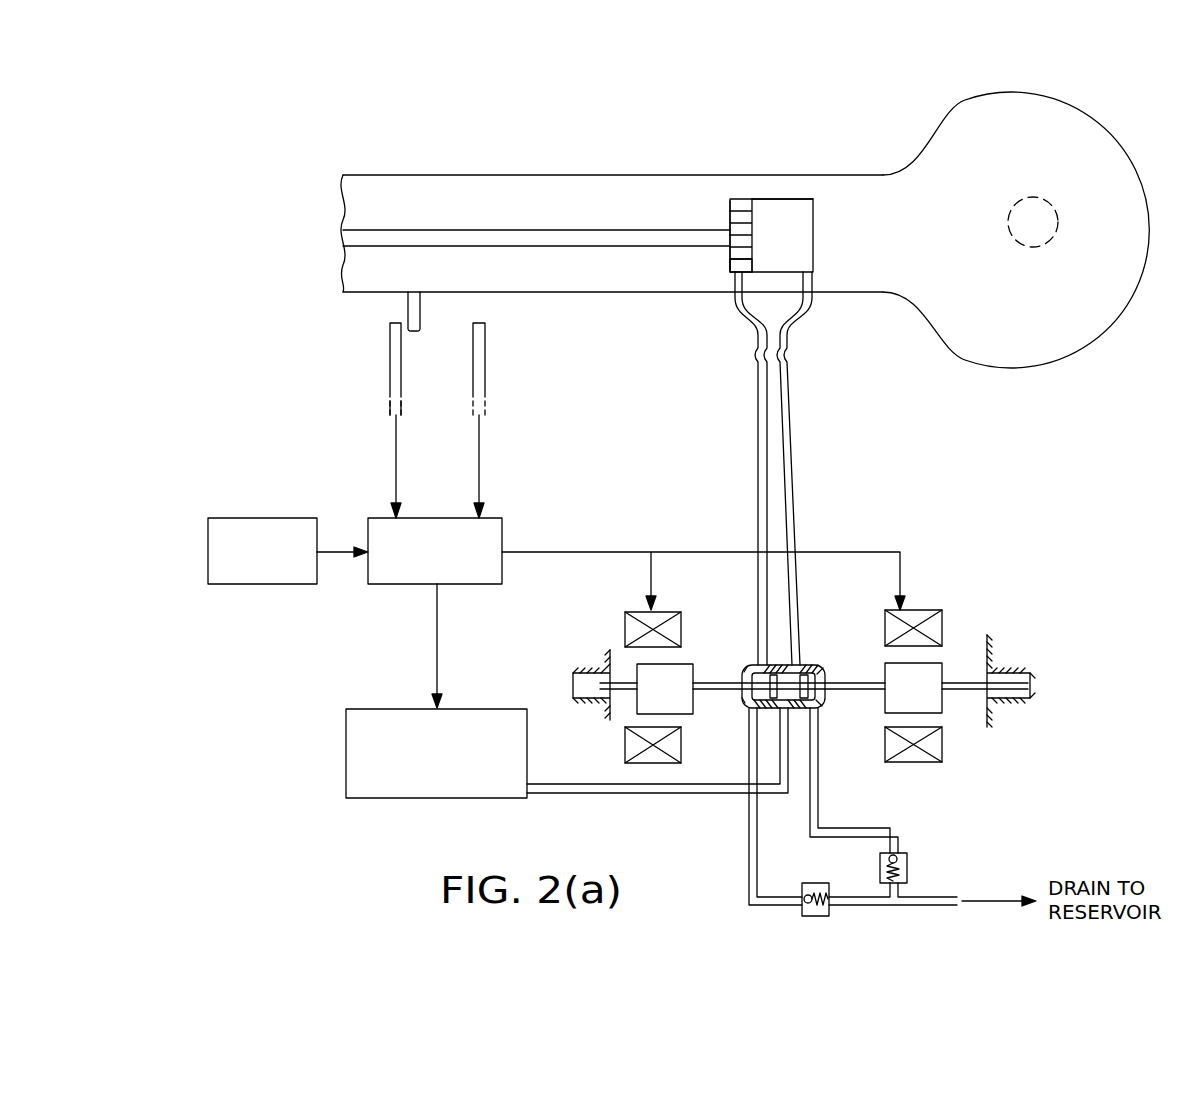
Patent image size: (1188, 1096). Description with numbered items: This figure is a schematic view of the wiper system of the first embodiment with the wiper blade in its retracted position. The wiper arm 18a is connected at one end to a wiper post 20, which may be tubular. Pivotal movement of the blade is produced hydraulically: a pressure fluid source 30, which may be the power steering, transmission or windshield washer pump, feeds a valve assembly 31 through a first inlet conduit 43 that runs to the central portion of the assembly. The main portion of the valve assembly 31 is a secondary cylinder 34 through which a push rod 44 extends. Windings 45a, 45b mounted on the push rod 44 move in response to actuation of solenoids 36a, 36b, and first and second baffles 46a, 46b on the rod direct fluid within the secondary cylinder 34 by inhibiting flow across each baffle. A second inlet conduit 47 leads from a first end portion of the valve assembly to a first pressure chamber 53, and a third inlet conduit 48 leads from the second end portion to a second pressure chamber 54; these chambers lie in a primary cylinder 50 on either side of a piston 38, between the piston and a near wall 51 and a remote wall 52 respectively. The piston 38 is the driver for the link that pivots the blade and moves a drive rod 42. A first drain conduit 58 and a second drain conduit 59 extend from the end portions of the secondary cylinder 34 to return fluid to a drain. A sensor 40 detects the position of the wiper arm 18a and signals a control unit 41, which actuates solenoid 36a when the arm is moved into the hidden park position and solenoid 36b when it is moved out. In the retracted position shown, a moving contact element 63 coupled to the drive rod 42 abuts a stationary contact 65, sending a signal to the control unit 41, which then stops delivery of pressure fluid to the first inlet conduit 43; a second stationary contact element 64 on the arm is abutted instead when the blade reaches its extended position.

The wiper arm 18a is at (1012, 92).
The wiper post 20 is at (1055, 205).
The pressure fluid source 30 is at (345, 752).
The valve assembly 31 is at (774, 659).
The secondary cylinder 34 is at (746, 672).
The solenoid 36a is at (624, 628).
The solenoid 36b is at (942, 622).
The piston 38 is at (740, 200).
The sensor 40 is at (255, 584).
The control unit 41 is at (378, 584).
The drive rod 42 is at (458, 235).
The first inlet conduit 43 is at (600, 795).
The push rod 44 is at (850, 682).
The winding 45a is at (688, 664).
The winding 45b is at (942, 713).
The first baffle 46a is at (748, 700).
The second baffle 46b is at (805, 672).
The second inlet conduit 47 is at (757, 445).
The third inlet conduit 48 is at (795, 465).
The primary cylinder 50 is at (780, 213).
The near wall 51 is at (728, 262).
The remote wall 52 is at (815, 212).
The first pressure chamber 53 is at (730, 206).
The second pressure chamber 54 is at (797, 208).
The first drain conduit 58 is at (748, 836).
The second drain conduit 59 is at (820, 795).
The moving contact element 63 is at (413, 333).
The stationary contact element 64 is at (486, 331).
The stationary contact 65 is at (389, 331).